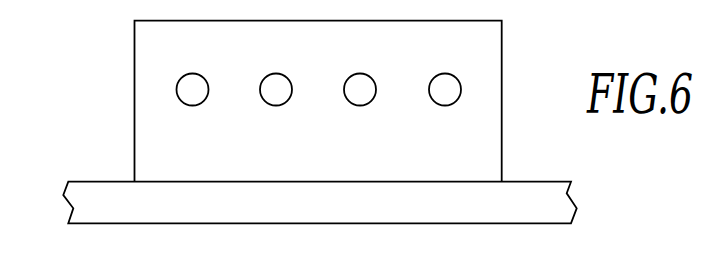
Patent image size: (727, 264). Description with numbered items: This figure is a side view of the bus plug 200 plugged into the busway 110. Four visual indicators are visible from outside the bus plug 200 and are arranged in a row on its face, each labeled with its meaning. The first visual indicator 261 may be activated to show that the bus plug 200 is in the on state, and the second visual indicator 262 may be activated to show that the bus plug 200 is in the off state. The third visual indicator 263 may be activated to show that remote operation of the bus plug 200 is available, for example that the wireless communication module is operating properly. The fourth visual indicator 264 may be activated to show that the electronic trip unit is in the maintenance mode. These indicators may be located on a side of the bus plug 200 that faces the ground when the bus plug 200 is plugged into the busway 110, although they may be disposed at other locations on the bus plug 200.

The busway 110 is at (105, 182).
The bus plug 200 is at (503, 35).
The first visual indicator 261 is at (363, 74).
The second visual indicator 262 is at (448, 74).
The third visual indicator 263 is at (280, 74).
The fourth visual indicator 264 is at (195, 74).